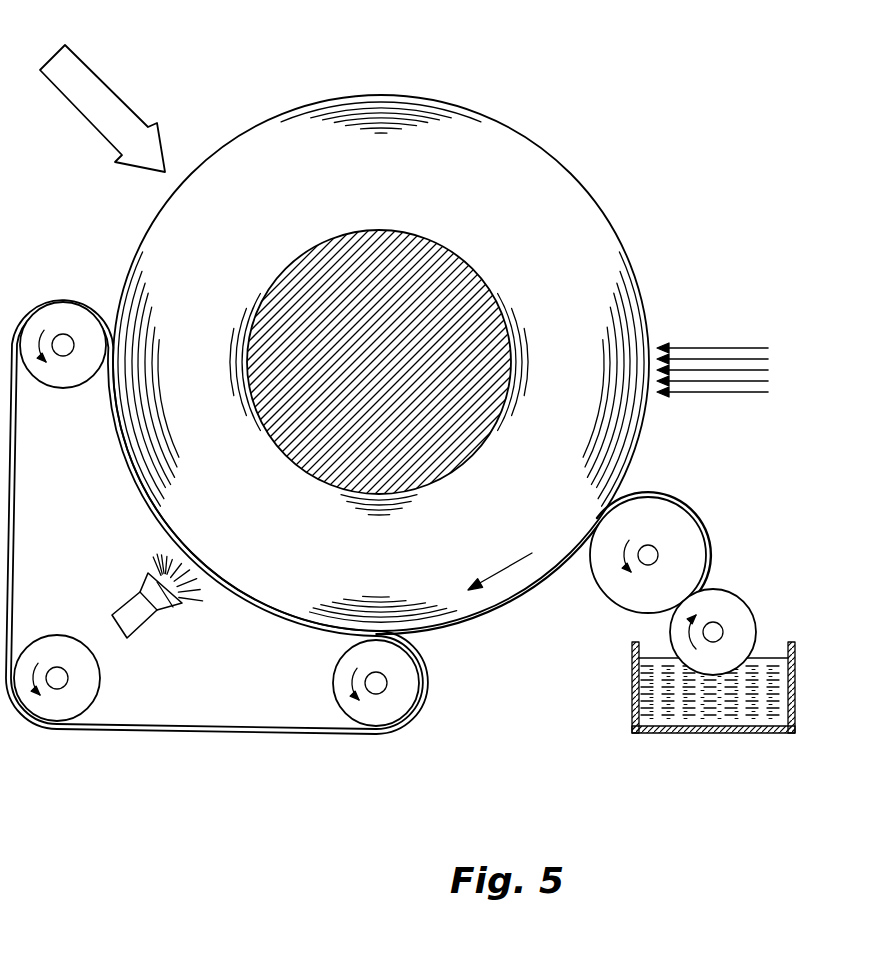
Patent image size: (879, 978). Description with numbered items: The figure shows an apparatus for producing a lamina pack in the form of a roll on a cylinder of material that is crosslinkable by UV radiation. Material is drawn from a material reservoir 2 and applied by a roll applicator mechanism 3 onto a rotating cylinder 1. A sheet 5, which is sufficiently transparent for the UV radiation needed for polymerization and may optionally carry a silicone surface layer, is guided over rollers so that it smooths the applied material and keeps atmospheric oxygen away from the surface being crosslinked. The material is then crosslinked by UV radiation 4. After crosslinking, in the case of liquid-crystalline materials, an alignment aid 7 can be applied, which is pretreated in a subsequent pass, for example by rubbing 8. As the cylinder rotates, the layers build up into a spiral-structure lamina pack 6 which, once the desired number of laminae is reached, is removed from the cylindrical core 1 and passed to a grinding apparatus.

The rotating cylinder 1 is at (306, 292).
The material reservoir 2 is at (725, 735).
The roll applicator mechanism 3 is at (713, 530).
The UV radiation 4 is at (138, 617).
The sheet 5 is at (270, 733).
The spiral-structure lamina pack 6 is at (620, 288).
The alignment aid 7 is at (98, 102).
The rubbing 8 is at (723, 340).